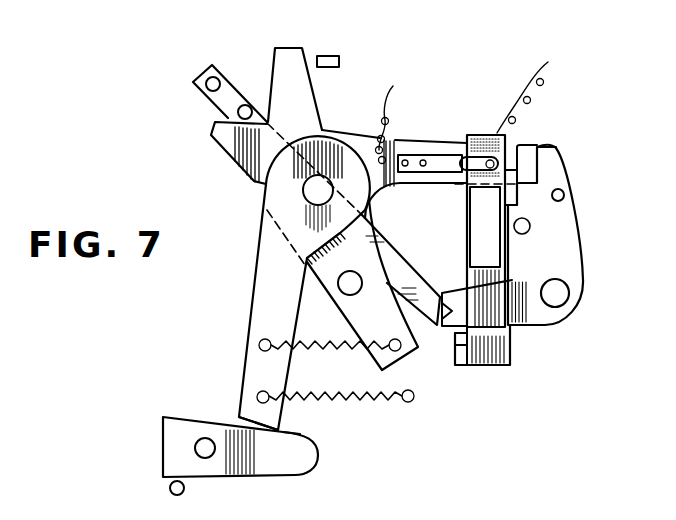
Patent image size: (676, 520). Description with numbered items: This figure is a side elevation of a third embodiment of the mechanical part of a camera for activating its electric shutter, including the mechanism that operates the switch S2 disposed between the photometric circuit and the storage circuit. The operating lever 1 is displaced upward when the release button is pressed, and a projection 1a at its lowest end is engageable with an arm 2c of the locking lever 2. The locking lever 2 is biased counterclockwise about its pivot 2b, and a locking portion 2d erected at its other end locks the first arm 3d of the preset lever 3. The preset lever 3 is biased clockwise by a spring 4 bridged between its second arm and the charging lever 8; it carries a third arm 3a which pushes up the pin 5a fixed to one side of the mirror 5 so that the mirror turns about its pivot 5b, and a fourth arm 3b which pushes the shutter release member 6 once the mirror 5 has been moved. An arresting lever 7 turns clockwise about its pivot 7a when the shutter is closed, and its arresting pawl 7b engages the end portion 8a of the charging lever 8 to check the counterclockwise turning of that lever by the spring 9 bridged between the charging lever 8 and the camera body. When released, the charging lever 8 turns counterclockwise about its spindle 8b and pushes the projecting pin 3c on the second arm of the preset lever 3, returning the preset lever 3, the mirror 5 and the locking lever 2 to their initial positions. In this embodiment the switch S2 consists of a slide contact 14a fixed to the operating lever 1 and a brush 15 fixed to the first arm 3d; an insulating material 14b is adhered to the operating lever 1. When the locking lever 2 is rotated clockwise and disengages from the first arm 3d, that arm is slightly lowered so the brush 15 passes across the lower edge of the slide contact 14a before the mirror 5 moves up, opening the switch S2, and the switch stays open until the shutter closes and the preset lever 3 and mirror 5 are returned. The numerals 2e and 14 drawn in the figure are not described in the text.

The operating lever 1 is at (509, 349).
The projection 1a is at (455, 340).
The locking lever 2 is at (582, 220).
The pivot 2b is at (565, 302).
The arm 2c is at (446, 294).
The locking portion 2d is at (556, 160).
The latch pin 2e is at (530, 230).
The preset lever 3 is at (343, 133).
The third arm 3a is at (212, 138).
The fourth arm 3b is at (289, 54).
The projecting pin 3c is at (346, 292).
The first arm 3d is at (538, 146).
The spring 4 is at (352, 347).
The mirror 5 is at (389, 243).
The pin 5a is at (245, 104).
The pivot 5b is at (207, 76).
The shutter release member 6 is at (339, 62).
The arresting lever 7 is at (160, 437).
The pivot 7a is at (208, 458).
The arresting pawl 7b is at (284, 430).
The charging lever 8 is at (254, 277).
The end portion 8a is at (250, 413).
The spindle 8b is at (310, 191).
The spring 9 is at (357, 397).
The slide bar 14 is at (477, 236).
The slide contact 14a is at (519, 152).
The insulating material 14b is at (477, 209).
The brush 15 is at (452, 155).
The switch S2 is at (487, 127).